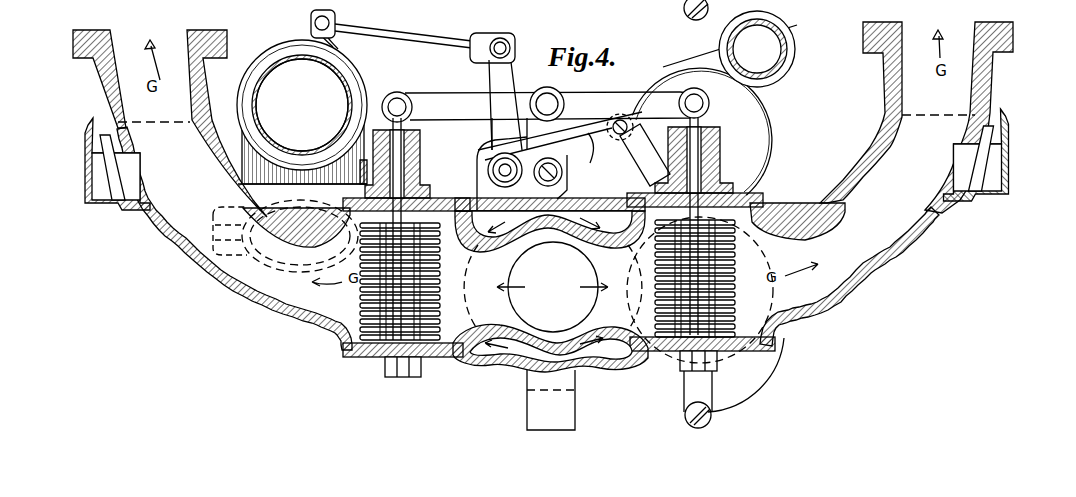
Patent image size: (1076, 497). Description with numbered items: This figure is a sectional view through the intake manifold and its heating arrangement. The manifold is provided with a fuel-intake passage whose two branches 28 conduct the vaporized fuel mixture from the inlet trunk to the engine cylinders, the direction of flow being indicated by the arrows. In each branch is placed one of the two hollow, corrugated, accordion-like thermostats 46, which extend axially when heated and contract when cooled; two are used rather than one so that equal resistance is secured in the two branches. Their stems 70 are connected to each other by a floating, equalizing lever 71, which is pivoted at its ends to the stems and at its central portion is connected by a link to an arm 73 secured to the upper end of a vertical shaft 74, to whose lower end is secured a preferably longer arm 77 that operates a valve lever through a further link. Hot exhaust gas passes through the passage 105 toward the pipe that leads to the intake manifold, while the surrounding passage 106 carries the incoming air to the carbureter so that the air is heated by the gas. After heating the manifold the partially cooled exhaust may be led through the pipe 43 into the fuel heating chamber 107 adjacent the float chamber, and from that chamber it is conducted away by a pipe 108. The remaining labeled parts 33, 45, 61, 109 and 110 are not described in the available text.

The branches 28 is at (236, 272).
The mounting bracket on inlet pipe 33 is at (125, 206).
The pipe 43 is at (780, 35).
The left valve stack 45 is at (355, 352).
The thermostats 46 is at (447, 357).
The screw 61 is at (682, 8).
The stems 70 is at (715, 142).
The floating equalizing lever 71 is at (530, 130).
The arm 73 is at (527, 184).
The vertical shaft 74 is at (488, 160).
The longer arm 77 is at (625, 150).
The passage 105 is at (328, 69).
The surrounding passage 106 is at (266, 60).
The fuel heating chamber 107 is at (290, 44).
The pipe 108 is at (340, 49).
The connecting rod 109 is at (415, 30).
The link rod 110 is at (490, 76).